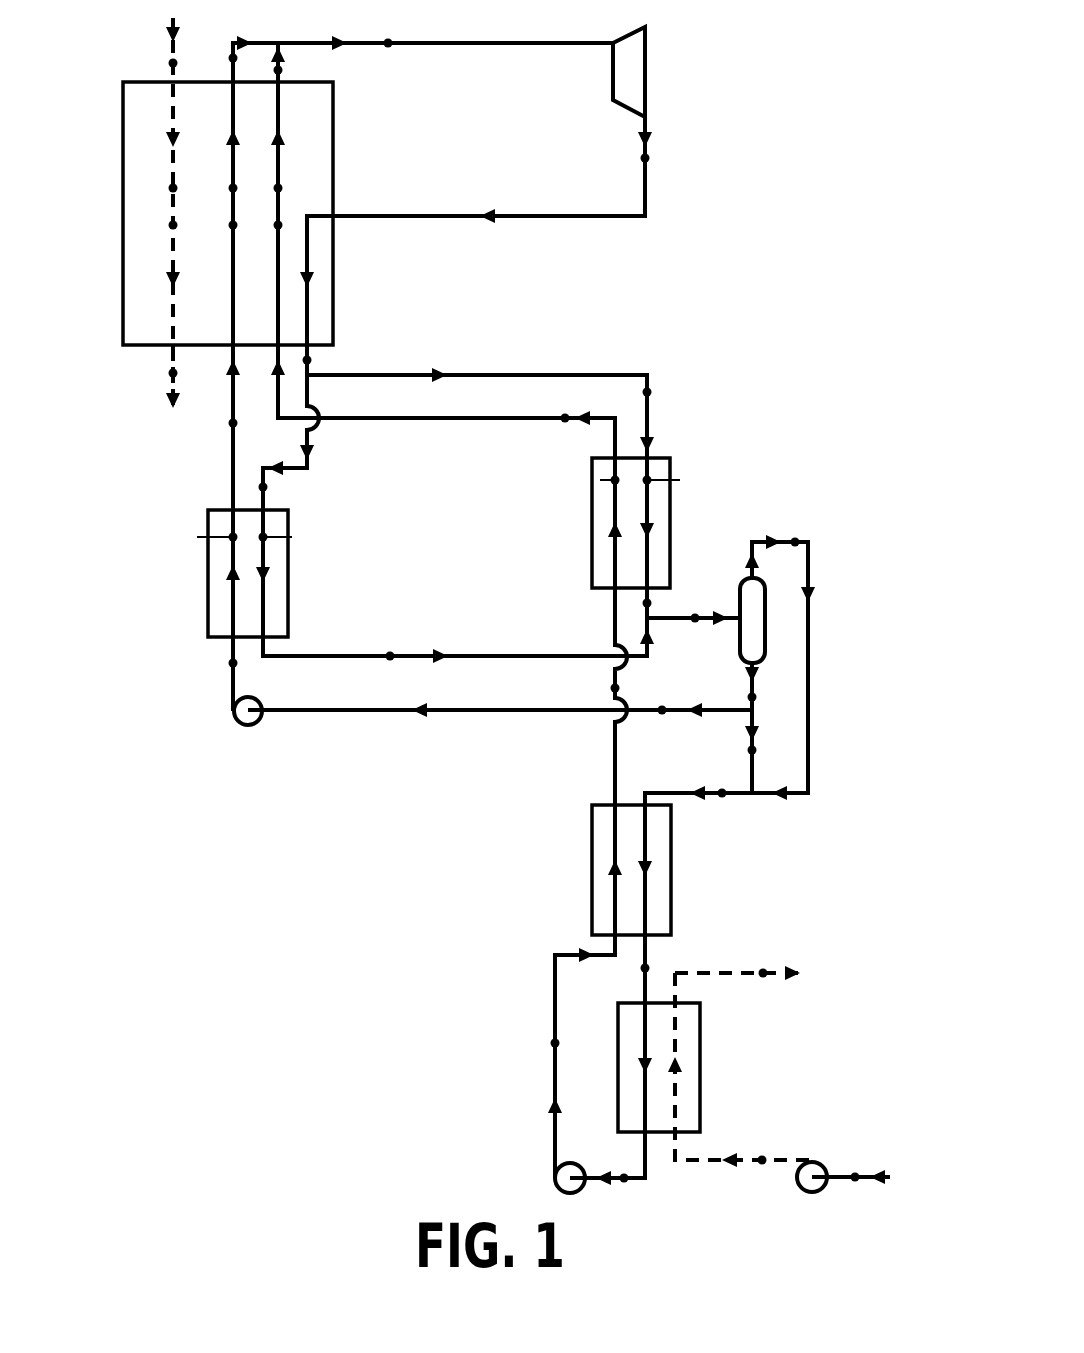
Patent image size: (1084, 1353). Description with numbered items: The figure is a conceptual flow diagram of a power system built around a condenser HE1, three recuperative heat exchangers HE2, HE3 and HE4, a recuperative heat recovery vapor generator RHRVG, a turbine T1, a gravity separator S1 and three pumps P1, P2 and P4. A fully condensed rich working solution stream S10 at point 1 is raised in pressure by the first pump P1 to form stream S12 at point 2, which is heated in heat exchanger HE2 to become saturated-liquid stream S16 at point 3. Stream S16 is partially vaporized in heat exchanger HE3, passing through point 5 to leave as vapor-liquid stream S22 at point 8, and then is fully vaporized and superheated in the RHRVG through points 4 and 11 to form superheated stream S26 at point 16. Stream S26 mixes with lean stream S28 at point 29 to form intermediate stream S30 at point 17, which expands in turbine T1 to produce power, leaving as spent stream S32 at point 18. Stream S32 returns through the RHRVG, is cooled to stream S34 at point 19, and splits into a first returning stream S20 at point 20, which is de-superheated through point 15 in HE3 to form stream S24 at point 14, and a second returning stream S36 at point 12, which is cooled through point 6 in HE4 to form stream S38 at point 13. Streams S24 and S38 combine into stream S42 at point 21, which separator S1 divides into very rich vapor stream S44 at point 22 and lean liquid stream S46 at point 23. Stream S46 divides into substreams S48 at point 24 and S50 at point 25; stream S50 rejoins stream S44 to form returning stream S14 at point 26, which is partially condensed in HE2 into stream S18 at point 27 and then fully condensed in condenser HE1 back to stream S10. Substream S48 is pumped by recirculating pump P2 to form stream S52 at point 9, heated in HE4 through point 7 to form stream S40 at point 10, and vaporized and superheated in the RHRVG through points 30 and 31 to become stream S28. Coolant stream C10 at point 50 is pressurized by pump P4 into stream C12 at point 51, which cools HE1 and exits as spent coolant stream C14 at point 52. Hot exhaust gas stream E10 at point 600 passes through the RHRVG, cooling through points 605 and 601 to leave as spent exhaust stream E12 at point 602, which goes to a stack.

The point 1 is at (624, 1189).
The point 2 is at (547, 1043).
The point 3 is at (608, 688).
The point 4 is at (285, 227).
The point 5 is at (594, 480).
The point 6 is at (284, 538).
The point 7 is at (211, 537).
The point 8 is at (564, 409).
The point 9 is at (225, 663).
The point 10 is at (221, 423).
The point 11 is at (267, 188).
The point 12 is at (274, 489).
The point 13 is at (390, 667).
The point 14 is at (659, 603).
The point 15 is at (672, 480).
The point 16 is at (290, 72).
The point 17 is at (388, 33).
The point 18 is at (657, 158).
The point 19 is at (318, 360).
The point 20 is at (660, 392).
The point 21 is at (694, 629).
The point 22 is at (795, 532).
The point 23 is at (740, 697).
The point 24 is at (661, 700).
The point 25 is at (739, 750).
The point 26 is at (718, 803).
The point 27 is at (634, 968).
The point 29 is at (221, 58).
The point 30 is at (221, 225).
The point 31 is at (221, 188).
The point 50 is at (855, 1167).
The point 51 is at (762, 1151).
The point 52 is at (763, 963).
The point 600 is at (156, 63).
The point 601 is at (156, 225).
The point 602 is at (156, 373).
The point 605 is at (156, 188).
The fully condensed basic rich working solution stream S10 is at (648, 1168).
The higher pressure rich working solution stream S12 is at (555, 1012).
The returning rich working solution stream S14 is at (733, 797).
The heated higher pressure rich working solution stream S16 is at (613, 785).
The partially condensed rich working solution stream S18 is at (648, 962).
The first returning intermediate working solution stream S20 is at (649, 373).
The partially vaporized higher pressure rich working solution stream S22 is at (493, 418).
The partially condensed spent intermediate working solution stream S24 is at (647, 617).
The higher pressure superheated vapor rich working solution stream S26 is at (282, 47).
The lean working solution stream S28 is at (236, 40).
The intermediate working solution stream S30 is at (456, 43).
The spent intermediate working solution stream S32 is at (646, 196).
The cooled spent intermediate working solution stream S34 is at (330, 373).
The second returning intermediate working solution stream S36 is at (307, 467).
The partially condensed stream S38 is at (337, 656).
The partially vaporized lean working solution stream S40 is at (233, 452).
The combined intermediate working solution stream S42 is at (683, 618).
The very rich saturated vapor stream S44 is at (809, 545).
The lean liquid stream S46 is at (753, 685).
The lean liquid substream S48 is at (375, 713).
The lean liquid substream S50 is at (752, 770).
The higher pressure lean working solution stream S52 is at (233, 685).
The diesel exhaust gas stream E10 is at (172, 50).
The spent exhaust stream E12 is at (172, 362).
The coolant stream C10 is at (845, 1177).
The coolant stream C12 is at (787, 1162).
The spent coolant stream C14 is at (750, 975).
The condenser HE1 is at (690, 1067).
The second heat exchanger HE2 is at (660, 870).
The third heat exchanger HE3 is at (609, 523).
The fourth heat exchanger HE4 is at (272, 573).
The turbine T1 is at (649, 72).
The gravity separator S1 is at (769, 620).
The first pump P1 is at (550, 1178).
The recirculating pump P2 is at (226, 711).
The pump P4 is at (842, 1191).
The recuperative heat recovery vapor generator RHRVG is at (285, 213).